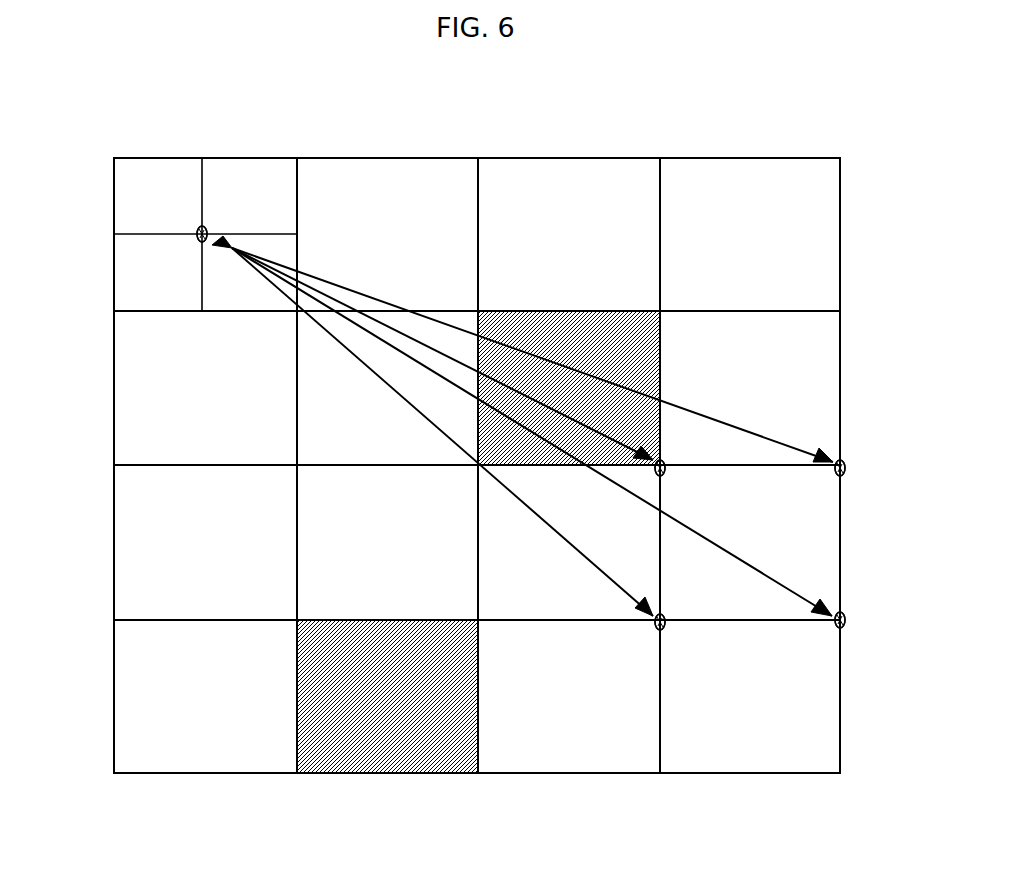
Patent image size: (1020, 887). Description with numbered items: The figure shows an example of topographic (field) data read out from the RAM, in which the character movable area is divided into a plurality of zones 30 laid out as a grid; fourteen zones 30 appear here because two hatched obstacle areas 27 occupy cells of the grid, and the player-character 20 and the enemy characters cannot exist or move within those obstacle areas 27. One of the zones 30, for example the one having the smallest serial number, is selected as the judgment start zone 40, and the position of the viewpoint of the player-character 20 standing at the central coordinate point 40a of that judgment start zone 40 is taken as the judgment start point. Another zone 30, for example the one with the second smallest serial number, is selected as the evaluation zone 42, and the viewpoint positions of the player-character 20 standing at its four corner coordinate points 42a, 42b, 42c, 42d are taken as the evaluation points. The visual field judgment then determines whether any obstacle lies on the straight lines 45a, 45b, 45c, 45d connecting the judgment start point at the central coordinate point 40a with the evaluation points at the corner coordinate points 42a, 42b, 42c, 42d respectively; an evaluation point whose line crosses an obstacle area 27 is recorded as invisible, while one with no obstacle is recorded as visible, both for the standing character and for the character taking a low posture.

The player-character 20 is at (206, 226).
The obstacle area 27 is at (642, 322).
The zone 30 is at (787, 175).
The judgment start zone 40 is at (275, 178).
The central coordinate point 40a is at (200, 238).
The evaluation zone 42 is at (797, 513).
The corner coordinate point 42a is at (667, 472).
The corner coordinate point 42b is at (849, 472).
The corner coordinate point 42c is at (850, 622).
The corner coordinate point 42d is at (668, 630).
The straight line 45a is at (340, 302).
The straight line 45b is at (721, 418).
The straight line 45c is at (392, 345).
The straight line 45d is at (396, 398).